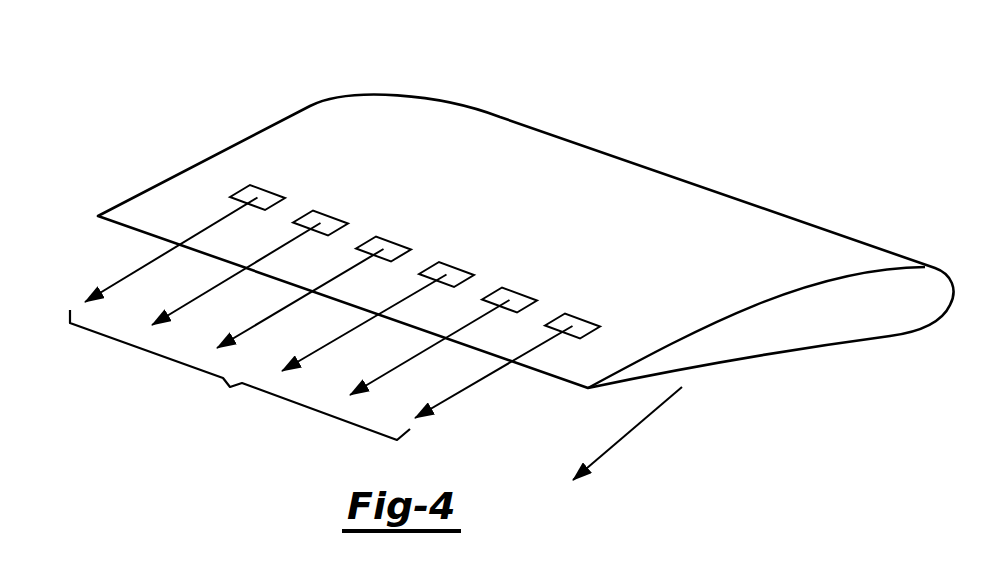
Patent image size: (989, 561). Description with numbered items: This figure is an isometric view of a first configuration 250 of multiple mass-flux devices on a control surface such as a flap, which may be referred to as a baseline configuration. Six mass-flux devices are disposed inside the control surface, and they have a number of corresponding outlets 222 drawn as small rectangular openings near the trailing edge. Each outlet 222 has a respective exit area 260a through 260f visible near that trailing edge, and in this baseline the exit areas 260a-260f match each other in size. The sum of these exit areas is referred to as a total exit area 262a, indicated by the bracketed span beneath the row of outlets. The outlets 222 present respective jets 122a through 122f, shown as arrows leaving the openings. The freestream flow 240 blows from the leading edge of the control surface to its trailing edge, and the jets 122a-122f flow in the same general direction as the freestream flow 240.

The first configuration 250 is at (278, 66).
The outlets 222 is at (469, 259).
The exit area 260a is at (230, 194).
The exit area 260f is at (585, 316).
The jet 122a is at (127, 274).
The jet 122f is at (456, 393).
The total exit area 262a is at (240, 375).
The freestream flow 240 is at (619, 437).